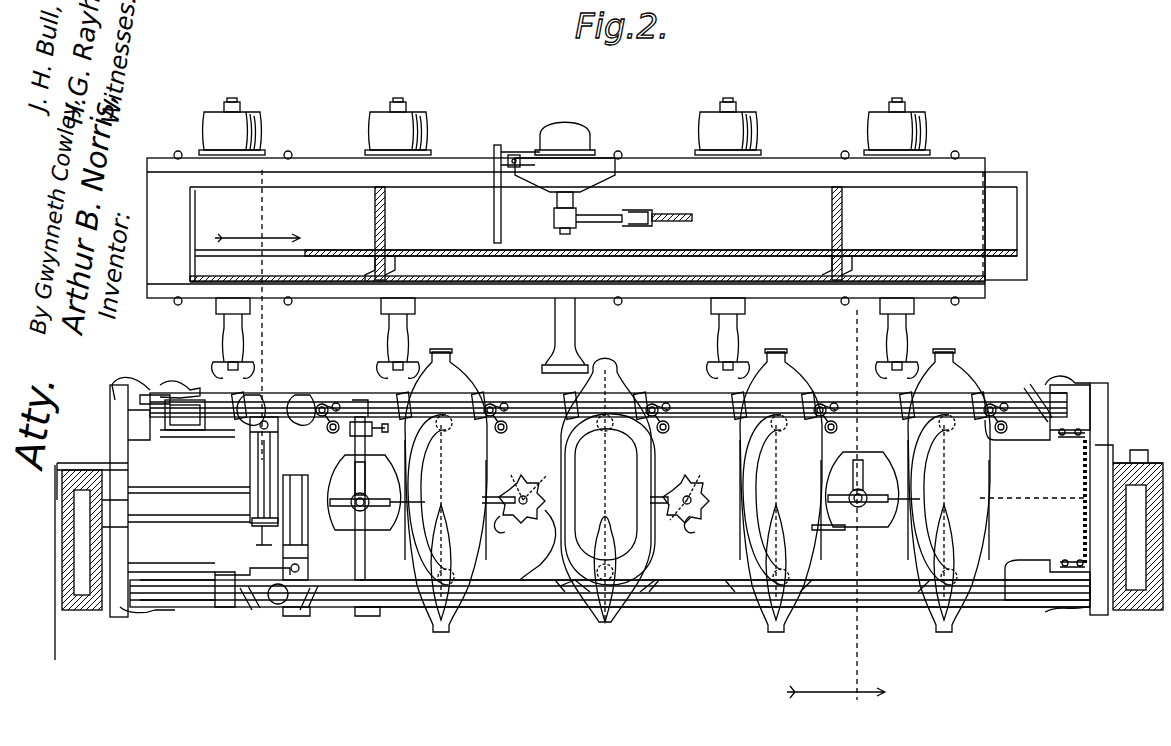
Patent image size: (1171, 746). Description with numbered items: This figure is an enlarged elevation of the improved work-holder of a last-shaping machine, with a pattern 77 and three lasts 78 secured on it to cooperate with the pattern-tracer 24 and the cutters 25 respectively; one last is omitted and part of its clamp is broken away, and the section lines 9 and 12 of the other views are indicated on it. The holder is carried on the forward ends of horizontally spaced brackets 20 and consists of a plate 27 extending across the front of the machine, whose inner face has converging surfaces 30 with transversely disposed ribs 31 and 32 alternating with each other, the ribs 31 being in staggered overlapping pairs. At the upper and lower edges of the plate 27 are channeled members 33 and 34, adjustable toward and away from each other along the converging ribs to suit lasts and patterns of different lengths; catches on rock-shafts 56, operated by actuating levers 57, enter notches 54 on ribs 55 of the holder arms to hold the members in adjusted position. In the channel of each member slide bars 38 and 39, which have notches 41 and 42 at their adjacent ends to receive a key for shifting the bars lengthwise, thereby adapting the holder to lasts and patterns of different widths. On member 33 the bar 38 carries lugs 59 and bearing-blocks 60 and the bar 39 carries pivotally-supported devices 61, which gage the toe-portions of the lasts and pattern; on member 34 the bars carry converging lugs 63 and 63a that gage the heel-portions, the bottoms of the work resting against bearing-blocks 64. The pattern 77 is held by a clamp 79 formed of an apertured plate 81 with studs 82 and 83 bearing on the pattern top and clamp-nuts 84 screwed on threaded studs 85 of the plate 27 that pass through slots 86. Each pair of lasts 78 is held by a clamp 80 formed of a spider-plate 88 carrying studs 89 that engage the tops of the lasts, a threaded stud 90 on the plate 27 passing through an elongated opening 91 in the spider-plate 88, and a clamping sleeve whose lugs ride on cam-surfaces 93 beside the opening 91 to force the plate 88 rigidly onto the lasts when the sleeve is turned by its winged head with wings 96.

The section line 9 is at (836, 707).
The section line 12 is at (257, 224).
The brackets 20 is at (90, 612).
The pattern-tracer 24 is at (552, 362).
The cutters 25 is at (248, 372).
The plate 27 is at (174, 547).
The converging surfaces 30 is at (232, 510).
The ribs 31 is at (275, 480).
The ribs 32 is at (358, 393).
The member 33 is at (530, 393).
The member 34 is at (342, 607).
The bar 38 is at (325, 535).
The bar 39 is at (385, 607).
The notch 41 is at (180, 395).
The notch 42 is at (185, 432).
The notches 54 is at (130, 518).
The ribs 55 is at (130, 487).
The rock-shafts 56 is at (120, 398).
The actuating levers 57 is at (148, 385).
The lugs 59 is at (242, 420).
The bearing-blocks 60 is at (272, 397).
The pivotally-supported devices 61 is at (325, 400).
The lugs 63 is at (300, 612).
The lugs 63a is at (248, 612).
The bearing-blocks 64 is at (276, 584).
The pattern 77 is at (622, 612).
The lasts 78 is at (450, 632).
The clamp 79 is at (555, 592).
The clamps 80 is at (830, 592).
The apertured plate 81 is at (562, 538).
The stud 82 is at (604, 430).
The stud 83 is at (608, 554).
The clamp-nuts 84 is at (520, 535).
The threaded studs 85 is at (511, 515).
The slots 86 is at (520, 483).
The spider-plate 88 is at (405, 487).
The studs 89 is at (952, 440).
The threaded stud 90 is at (372, 506).
The opening 91 is at (368, 475).
The cam-surfaces 93 is at (815, 525).
The wings 96 is at (405, 512).